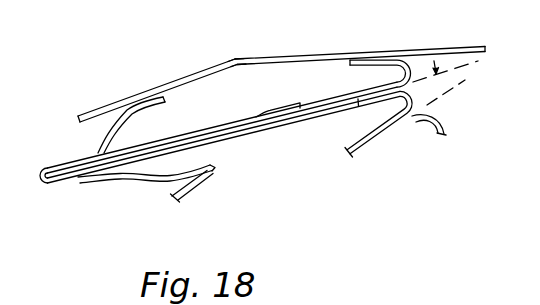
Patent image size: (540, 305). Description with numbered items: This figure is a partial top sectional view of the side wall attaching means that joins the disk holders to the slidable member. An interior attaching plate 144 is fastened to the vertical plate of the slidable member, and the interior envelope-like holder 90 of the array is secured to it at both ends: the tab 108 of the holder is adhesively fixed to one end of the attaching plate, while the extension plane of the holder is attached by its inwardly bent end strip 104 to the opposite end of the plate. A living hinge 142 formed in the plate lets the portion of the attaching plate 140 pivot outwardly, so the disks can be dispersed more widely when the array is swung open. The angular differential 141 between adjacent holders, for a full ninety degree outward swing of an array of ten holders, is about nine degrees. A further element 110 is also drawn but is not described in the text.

The interior envelope-like holder 90 is at (43, 187).
The inwardly bent end strip 104 is at (367, 65).
The tab 108 is at (152, 104).
The tab 110 is at (152, 181).
The attaching plate portion 140 is at (115, 103).
The angular differential 141 is at (446, 90).
The living hinge 142 is at (233, 60).
The interior attaching plate 144 is at (292, 57).